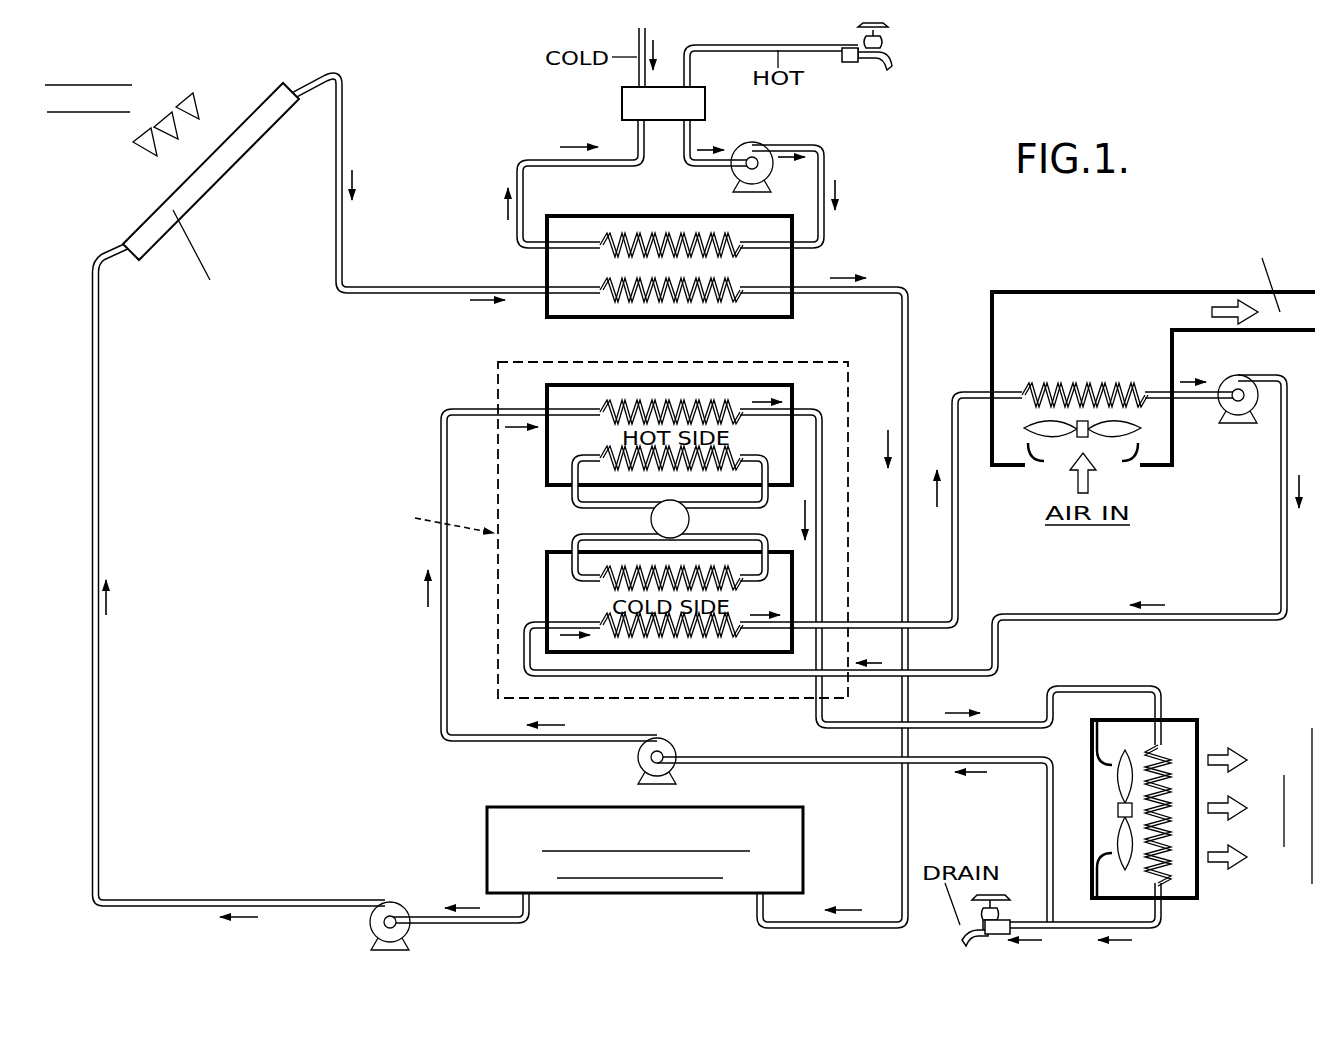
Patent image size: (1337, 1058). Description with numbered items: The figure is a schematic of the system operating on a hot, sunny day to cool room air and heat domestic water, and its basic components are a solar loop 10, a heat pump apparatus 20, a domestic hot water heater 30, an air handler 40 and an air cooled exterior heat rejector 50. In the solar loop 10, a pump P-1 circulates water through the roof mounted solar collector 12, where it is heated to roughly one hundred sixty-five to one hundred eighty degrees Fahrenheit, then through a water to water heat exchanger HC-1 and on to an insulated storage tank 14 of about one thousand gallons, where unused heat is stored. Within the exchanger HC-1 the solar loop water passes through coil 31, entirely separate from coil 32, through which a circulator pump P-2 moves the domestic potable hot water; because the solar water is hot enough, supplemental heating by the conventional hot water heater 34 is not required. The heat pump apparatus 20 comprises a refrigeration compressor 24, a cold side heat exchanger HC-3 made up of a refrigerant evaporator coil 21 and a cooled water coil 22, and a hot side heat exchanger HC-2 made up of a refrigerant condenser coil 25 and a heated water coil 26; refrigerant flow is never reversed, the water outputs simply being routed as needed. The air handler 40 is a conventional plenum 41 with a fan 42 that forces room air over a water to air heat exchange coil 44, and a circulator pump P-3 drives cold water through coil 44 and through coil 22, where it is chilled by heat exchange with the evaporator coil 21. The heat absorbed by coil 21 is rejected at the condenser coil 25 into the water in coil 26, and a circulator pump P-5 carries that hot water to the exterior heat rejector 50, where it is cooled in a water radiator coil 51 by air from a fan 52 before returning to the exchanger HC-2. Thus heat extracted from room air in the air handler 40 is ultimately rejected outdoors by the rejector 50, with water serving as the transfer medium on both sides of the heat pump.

The solar loop 10 is at (100, 435).
The solar collector 12 is at (228, 160).
The storage tank 14 is at (495, 827).
The heat pump apparatus 20 is at (497, 629).
The refrigerant evaporator coil 21 is at (610, 572).
The cooled water coil 22 is at (608, 622).
The refrigeration compressor 24 is at (670, 519).
The refrigerant condenser coil 25 is at (608, 455).
The heated water coil 26 is at (677, 405).
The domestic hot water heater 30 is at (618, 100).
The coil 31 is at (655, 298).
The coil 32 is at (659, 240).
The hot water heater 34 is at (681, 117).
The air handler 40 is at (987, 312).
The plenum 41 is at (1175, 352).
The fan 42 is at (1038, 428).
The water to air heat exchange coil 44 is at (1080, 385).
The air cooled exterior heat rejector 50 is at (1205, 745).
The water radiator coil 51 is at (1170, 845).
The fan 52 is at (1122, 787).
The pump P-1 is at (388, 910).
The circulator pump P-2 is at (750, 150).
The circulator pump P-3 is at (1232, 415).
The circulator pump P-5 is at (640, 760).
The water to water heat exchanger HC-1 is at (545, 262).
The hot side heat exchanger HC-2 is at (547, 395).
The cold side heat exchanger HC-3 is at (723, 653).